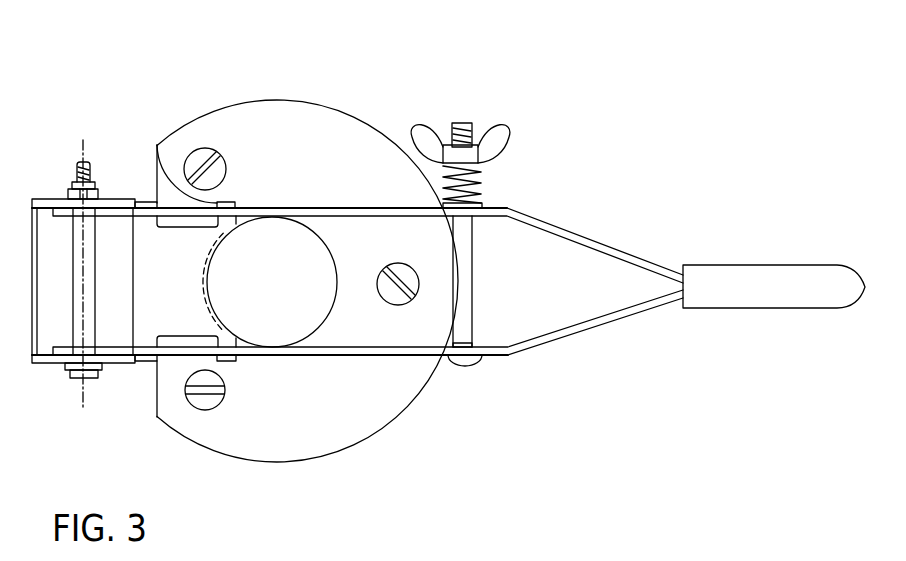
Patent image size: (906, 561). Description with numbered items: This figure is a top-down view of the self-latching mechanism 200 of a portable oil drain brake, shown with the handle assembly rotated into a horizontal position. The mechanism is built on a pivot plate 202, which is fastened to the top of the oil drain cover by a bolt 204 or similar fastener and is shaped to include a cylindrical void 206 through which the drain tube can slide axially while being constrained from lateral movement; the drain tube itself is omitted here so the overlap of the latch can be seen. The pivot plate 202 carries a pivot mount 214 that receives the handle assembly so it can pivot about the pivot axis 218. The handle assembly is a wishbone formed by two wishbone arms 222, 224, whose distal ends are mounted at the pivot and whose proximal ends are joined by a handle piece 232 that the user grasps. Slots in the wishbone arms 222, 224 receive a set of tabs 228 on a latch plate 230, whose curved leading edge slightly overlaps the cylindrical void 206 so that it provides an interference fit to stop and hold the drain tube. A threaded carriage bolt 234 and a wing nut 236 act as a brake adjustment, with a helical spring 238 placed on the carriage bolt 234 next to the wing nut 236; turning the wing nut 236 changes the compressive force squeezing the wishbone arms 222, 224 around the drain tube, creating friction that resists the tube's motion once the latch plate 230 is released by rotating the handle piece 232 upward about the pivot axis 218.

The self-latching mechanism 200 is at (366, 43).
The pivot plate 202 is at (295, 144).
The bolt 204 is at (212, 404).
The cylindrical void 206 is at (312, 307).
The pivot mount 214 is at (43, 197).
The pivot axis 218 is at (82, 400).
The wishbone arm 222 is at (573, 237).
The wishbone arm 224 is at (603, 327).
The tabs 228 is at (137, 203).
The latch plate 230 is at (189, 301).
The handle piece 232 is at (723, 263).
The carriage bolt 234 is at (462, 367).
The wing nut 236 is at (507, 123).
The helical spring 238 is at (480, 183).